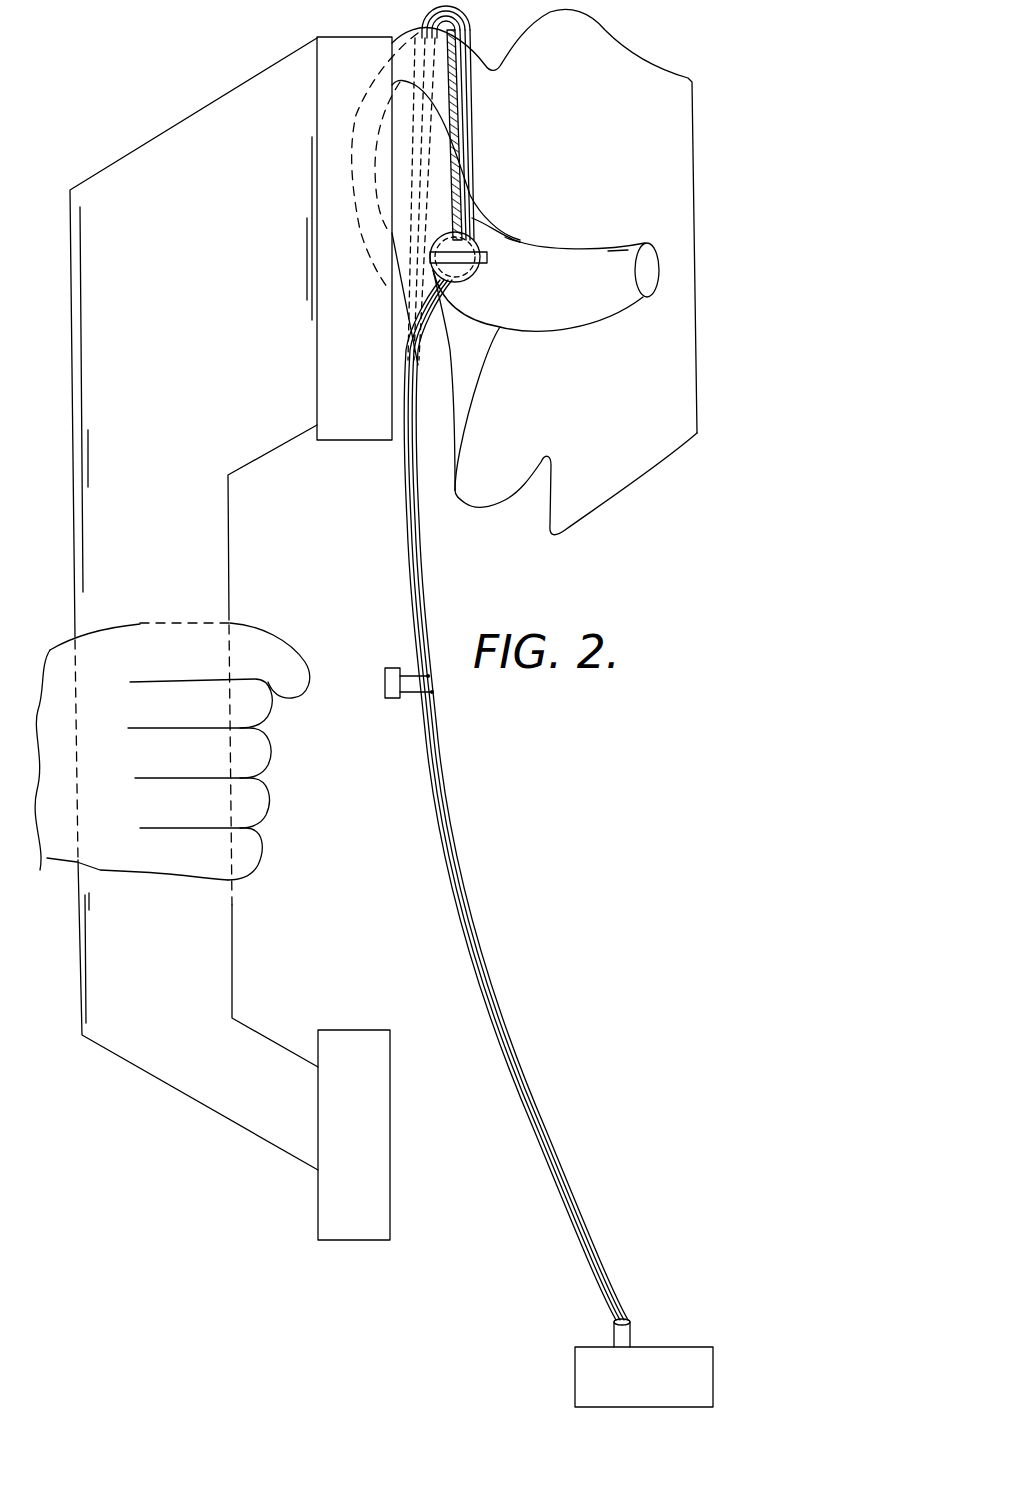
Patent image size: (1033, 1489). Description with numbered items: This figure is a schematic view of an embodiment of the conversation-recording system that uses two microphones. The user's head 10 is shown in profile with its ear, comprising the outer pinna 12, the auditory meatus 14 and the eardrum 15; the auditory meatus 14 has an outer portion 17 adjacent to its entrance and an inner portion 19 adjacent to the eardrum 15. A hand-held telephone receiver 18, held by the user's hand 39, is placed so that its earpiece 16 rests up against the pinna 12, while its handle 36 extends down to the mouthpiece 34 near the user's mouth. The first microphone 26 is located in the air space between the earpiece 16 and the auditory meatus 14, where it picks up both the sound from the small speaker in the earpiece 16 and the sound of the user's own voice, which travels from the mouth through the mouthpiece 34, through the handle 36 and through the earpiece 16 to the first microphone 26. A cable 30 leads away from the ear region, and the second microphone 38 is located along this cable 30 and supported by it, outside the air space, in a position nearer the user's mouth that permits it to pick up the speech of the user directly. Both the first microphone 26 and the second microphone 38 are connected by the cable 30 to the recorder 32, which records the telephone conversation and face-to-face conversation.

The head 10 is at (495, 68).
The pinna 12 is at (399, 50).
The auditory meatus 14 is at (551, 255).
The eardrum 15 is at (648, 262).
The earpiece 16 is at (287, 75).
The outer portion 17 is at (507, 236).
The hand-held telephone receiver 18 is at (156, 118).
The inner portion 19 is at (621, 255).
The first microphone 26 is at (463, 271).
The cable 30 is at (412, 552).
The recorder 32 is at (685, 1352).
The mouthpiece 34 is at (372, 1047).
The handle 36 is at (207, 497).
The second microphone 38 is at (385, 690).
The hand 39 is at (160, 868).